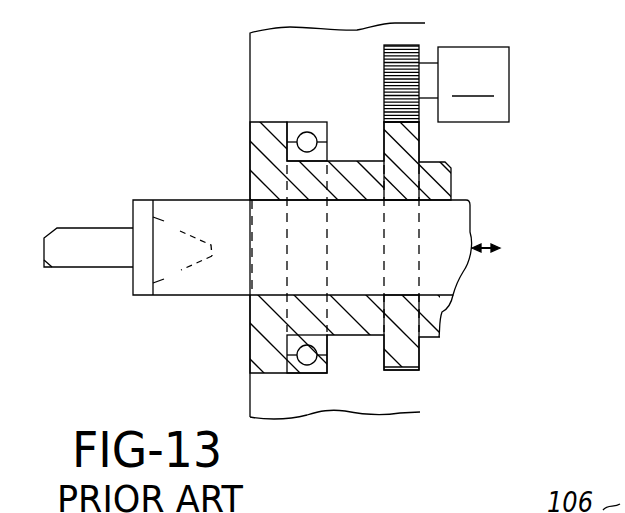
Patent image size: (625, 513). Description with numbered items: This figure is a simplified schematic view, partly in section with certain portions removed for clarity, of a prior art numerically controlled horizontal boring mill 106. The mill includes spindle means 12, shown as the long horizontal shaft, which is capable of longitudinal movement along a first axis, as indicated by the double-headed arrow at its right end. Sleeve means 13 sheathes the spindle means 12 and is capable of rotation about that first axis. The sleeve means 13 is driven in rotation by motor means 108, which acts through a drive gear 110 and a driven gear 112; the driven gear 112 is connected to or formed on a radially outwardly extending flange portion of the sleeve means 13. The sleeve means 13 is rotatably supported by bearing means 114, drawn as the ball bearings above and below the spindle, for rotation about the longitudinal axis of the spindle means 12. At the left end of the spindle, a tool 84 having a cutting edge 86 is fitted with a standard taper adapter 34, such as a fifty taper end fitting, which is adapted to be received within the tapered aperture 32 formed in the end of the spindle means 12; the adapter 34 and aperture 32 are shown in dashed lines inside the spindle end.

The spindle means 12 is at (472, 200).
The sleeve means 13 is at (353, 337).
The tapered aperture 32 is at (184, 233).
The standard taper adapter 34 is at (181, 271).
The tool 84 is at (82, 233).
The cutting edge 86 is at (47, 268).
The numerically controlled horizontal boring mill 106 is at (246, 69).
The motor means 108 is at (464, 84).
The drive gear 110 is at (383, 65).
The driven gear 112 is at (383, 124).
The bearing means 114 is at (300, 374).